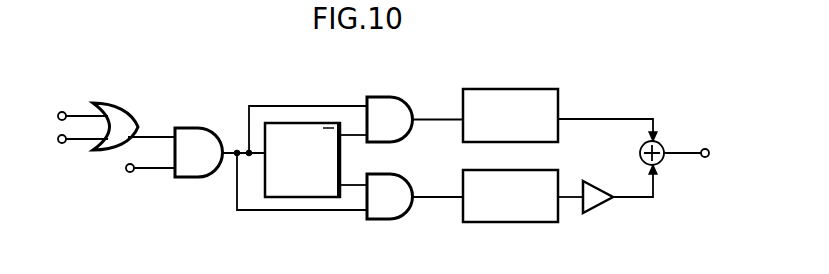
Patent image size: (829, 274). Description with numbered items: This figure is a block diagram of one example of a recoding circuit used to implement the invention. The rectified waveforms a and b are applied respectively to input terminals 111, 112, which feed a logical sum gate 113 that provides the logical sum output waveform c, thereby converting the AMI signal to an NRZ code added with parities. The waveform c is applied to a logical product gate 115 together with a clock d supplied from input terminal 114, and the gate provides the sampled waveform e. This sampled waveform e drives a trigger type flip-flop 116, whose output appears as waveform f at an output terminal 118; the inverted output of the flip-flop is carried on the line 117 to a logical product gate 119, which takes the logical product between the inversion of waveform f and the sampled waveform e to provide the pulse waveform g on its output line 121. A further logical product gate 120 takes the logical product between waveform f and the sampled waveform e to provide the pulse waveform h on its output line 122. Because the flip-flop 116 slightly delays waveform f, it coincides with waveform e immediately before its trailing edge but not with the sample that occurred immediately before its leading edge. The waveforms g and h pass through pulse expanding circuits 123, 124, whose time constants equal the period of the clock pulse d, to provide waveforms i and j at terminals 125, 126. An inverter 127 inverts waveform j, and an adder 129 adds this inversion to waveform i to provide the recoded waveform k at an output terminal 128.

The input terminal 111 is at (58, 112).
The input terminal 112 is at (58, 143).
The logical sum gate 113 is at (127, 110).
The input terminal 114 is at (128, 173).
The logical product gate 115 is at (192, 178).
The trigger type flip-flop 116 is at (302, 197).
The Q-bar output line 117 is at (355, 132).
The output terminal 118 is at (353, 187).
The logical product gate 119 is at (388, 98).
The logical product gate 120 is at (392, 222).
The output line g 121 is at (435, 118).
The output line h 122 is at (438, 200).
The pulse expanding circuit 123 is at (492, 88).
The pulse expanding circuit 124 is at (517, 223).
The terminal 125 is at (613, 117).
The terminal 126 is at (573, 200).
The inverter 127 is at (607, 207).
The output terminal 128 is at (692, 153).
The adder 129 is at (665, 147).